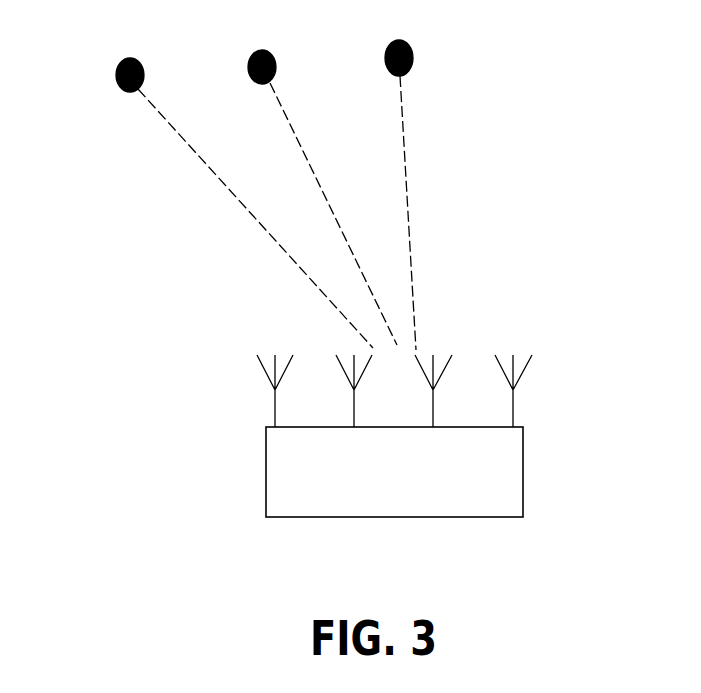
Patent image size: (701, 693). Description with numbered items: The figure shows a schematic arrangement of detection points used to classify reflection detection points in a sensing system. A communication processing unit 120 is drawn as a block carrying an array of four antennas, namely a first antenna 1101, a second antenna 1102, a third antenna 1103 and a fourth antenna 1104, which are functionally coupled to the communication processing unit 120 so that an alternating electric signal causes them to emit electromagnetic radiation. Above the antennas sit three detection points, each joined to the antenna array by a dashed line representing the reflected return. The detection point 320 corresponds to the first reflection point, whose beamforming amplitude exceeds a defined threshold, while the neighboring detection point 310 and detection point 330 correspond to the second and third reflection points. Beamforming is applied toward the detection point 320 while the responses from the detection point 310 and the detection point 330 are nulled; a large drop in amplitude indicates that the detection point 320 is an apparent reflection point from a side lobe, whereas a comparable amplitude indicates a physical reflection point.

The communication processing unit 120 is at (523, 452).
The first antenna 1101 is at (274, 400).
The second antenna 1102 is at (354, 412).
The third antenna 1103 is at (433, 412).
The fourth antenna 1104 is at (515, 400).
The detection point 310 is at (118, 65).
The detection point 320 is at (250, 53).
The detection point 330 is at (412, 47).